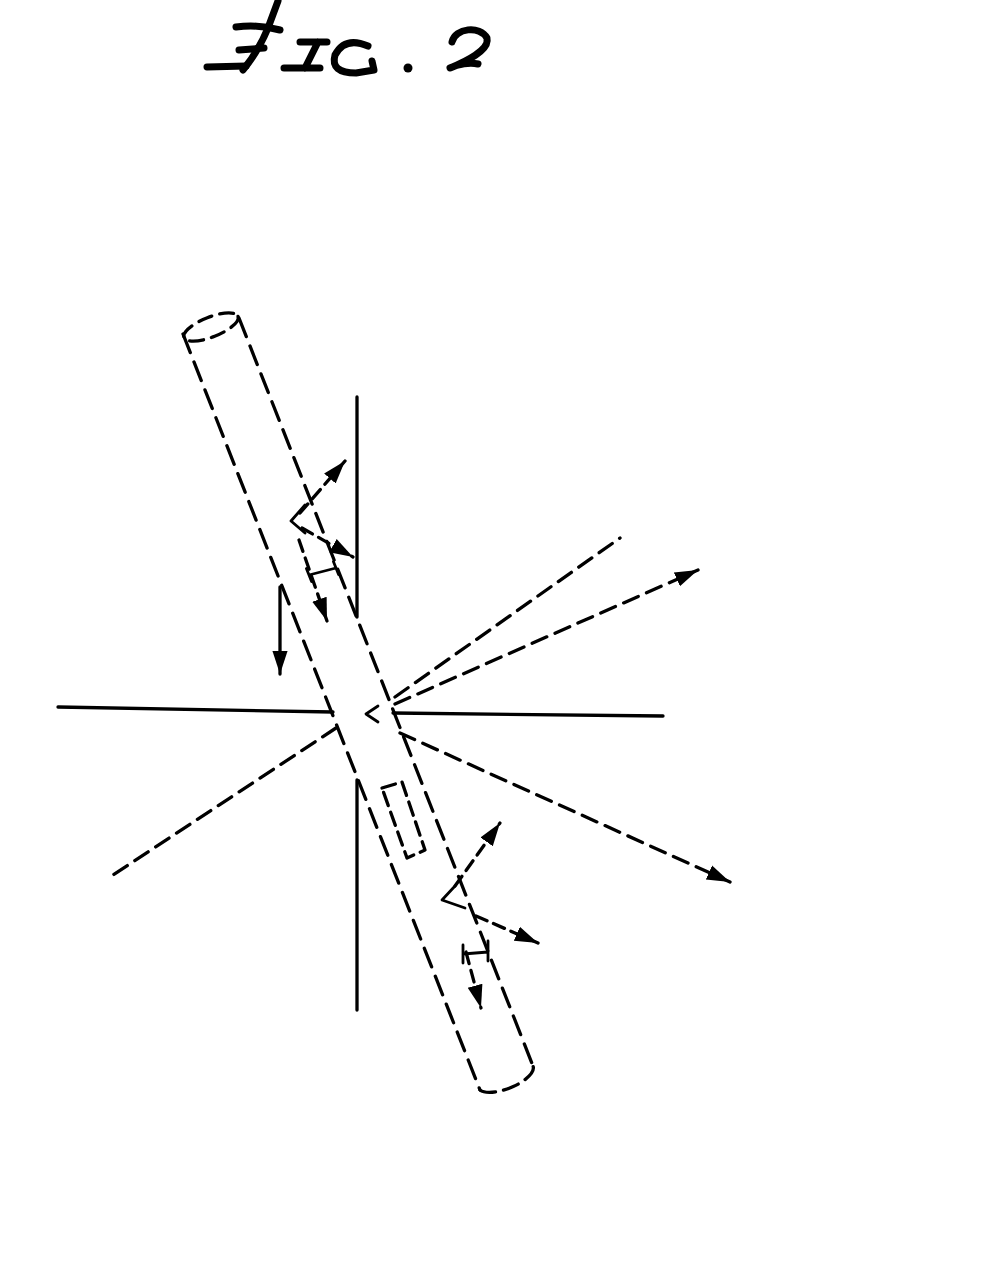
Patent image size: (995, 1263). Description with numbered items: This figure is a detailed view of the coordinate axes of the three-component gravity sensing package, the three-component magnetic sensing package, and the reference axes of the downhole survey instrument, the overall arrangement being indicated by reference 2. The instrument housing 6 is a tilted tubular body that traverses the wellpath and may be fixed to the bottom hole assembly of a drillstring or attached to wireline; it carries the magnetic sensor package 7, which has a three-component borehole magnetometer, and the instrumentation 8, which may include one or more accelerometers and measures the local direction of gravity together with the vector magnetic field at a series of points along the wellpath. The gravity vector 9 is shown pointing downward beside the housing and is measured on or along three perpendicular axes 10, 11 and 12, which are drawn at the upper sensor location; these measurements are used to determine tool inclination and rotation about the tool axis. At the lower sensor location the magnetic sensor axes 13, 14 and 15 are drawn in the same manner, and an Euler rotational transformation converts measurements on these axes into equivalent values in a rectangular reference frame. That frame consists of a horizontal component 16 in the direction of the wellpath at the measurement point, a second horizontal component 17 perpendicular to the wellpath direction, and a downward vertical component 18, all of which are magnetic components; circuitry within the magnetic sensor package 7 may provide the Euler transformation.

The reference coordinate system 2 is at (548, 512).
The instrument housing 6 is at (279, 380).
The magnetic sensor package 7 is at (228, 452).
The instrumentation 8 is at (400, 823).
The gravity vector 9 is at (275, 619).
The perpendicular axis 10 is at (327, 485).
The perpendicular axis 11 is at (300, 523).
The perpendicular axis 12 is at (336, 568).
The magnetic sensor axis 13 is at (478, 852).
The magnetic sensor axis 14 is at (480, 917).
The magnetic sensor axis 15 is at (488, 953).
The horizontal component 16 is at (571, 626).
The second horizontal component 17 is at (592, 824).
The downward component 18 is at (362, 732).